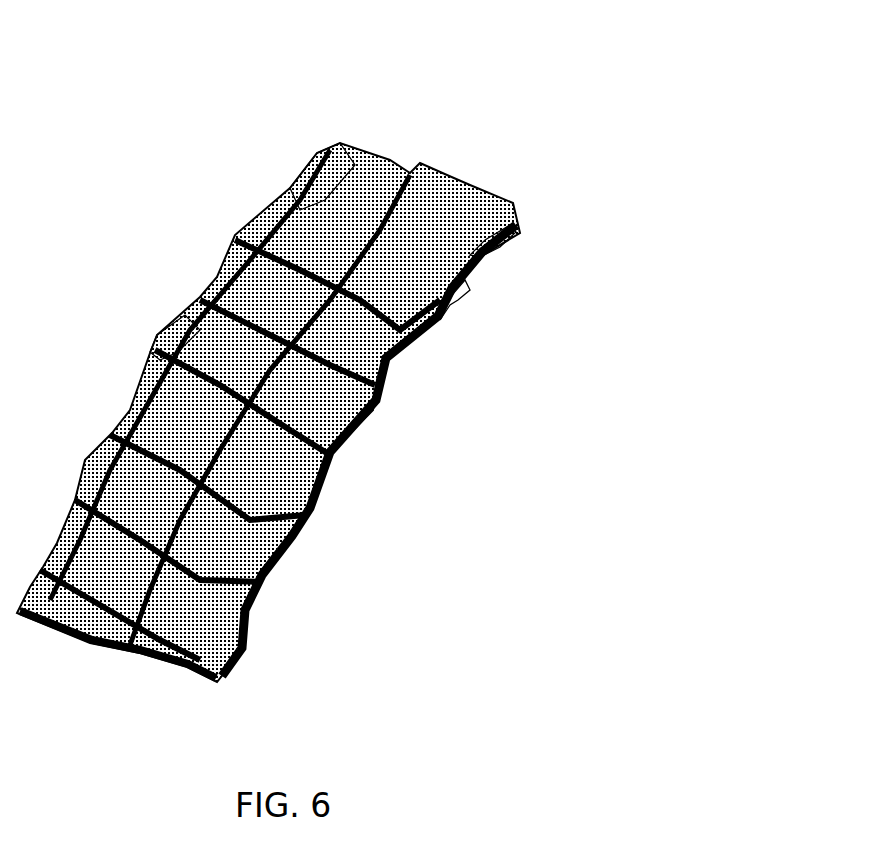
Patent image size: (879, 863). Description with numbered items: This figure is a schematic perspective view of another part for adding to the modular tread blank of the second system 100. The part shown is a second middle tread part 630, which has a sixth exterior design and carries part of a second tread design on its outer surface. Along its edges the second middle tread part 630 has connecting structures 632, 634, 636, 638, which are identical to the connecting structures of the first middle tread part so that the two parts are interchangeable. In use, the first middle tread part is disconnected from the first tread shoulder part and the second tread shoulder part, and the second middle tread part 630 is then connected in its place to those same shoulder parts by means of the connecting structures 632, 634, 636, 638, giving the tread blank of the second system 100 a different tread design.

The second system 100 is at (380, 344).
The second middle tread part 630 is at (453, 155).
The connecting structure 632 is at (152, 340).
The connecting structure 634 is at (290, 200).
The connecting structure 636 is at (450, 305).
The connecting structure 638 is at (480, 263).